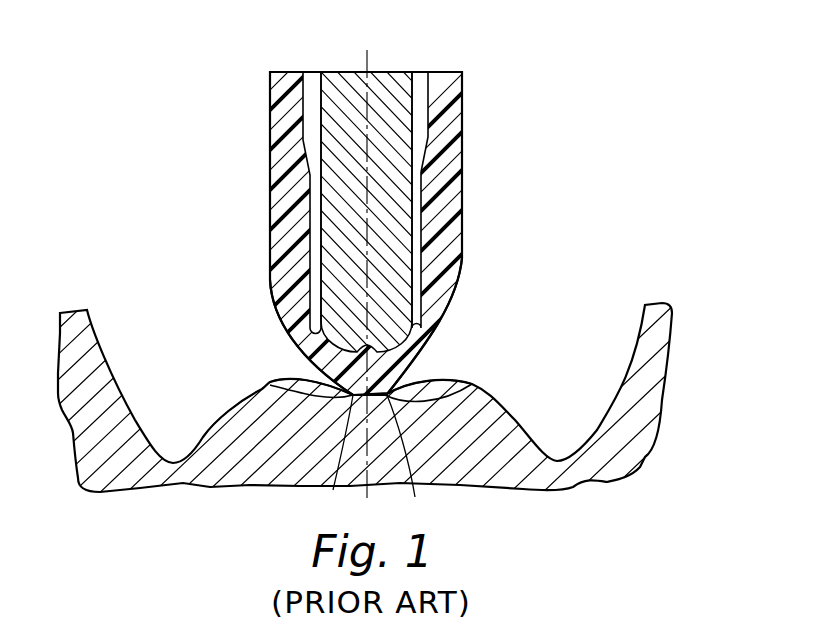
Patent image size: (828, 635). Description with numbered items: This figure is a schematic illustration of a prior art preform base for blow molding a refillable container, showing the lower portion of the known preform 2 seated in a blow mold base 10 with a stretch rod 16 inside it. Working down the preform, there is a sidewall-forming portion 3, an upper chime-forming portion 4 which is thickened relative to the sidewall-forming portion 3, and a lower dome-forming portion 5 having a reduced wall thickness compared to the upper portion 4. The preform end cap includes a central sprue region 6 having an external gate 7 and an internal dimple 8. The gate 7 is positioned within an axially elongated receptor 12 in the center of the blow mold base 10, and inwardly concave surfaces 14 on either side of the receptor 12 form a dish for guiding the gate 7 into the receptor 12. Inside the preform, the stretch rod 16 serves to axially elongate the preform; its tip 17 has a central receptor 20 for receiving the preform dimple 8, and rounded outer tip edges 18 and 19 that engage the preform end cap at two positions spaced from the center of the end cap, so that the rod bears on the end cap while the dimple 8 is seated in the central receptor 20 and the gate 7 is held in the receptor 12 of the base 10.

The preform 2 is at (361, 214).
The sidewall-forming portion 3 is at (463, 104).
The upper chime-forming portion 4 is at (463, 212).
The lower dome-forming portion 5 is at (437, 346).
The central sprue region 6 is at (407, 457).
The external gate 7 is at (341, 458).
The internal dimple 8 is at (312, 398).
The blow mold base 10 is at (670, 405).
The axially elongated receptor 12 is at (378, 395).
The inwardly concave surfaces 14 is at (410, 388).
The stretch rod 16 is at (388, 82).
The tip 17 is at (316, 325).
The rounded outer tip edge 18 is at (405, 336).
The rounded outer tip edge 19 is at (320, 346).
The central receptor 20 is at (440, 282).